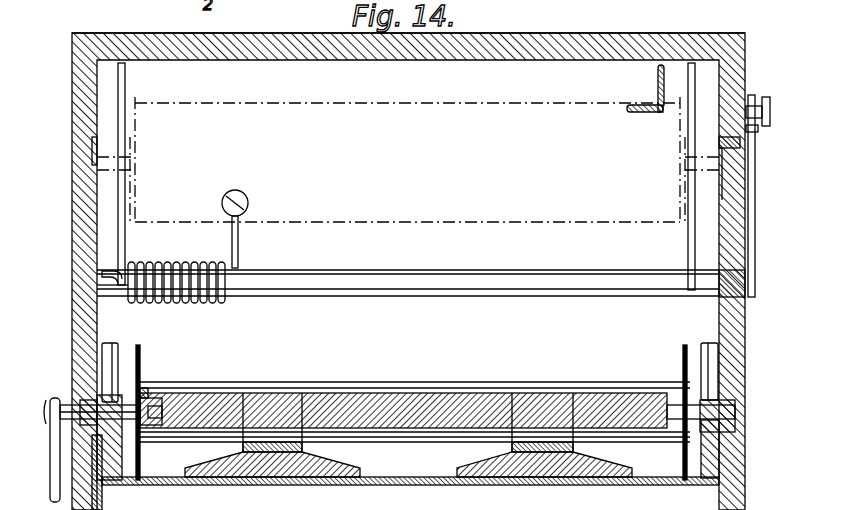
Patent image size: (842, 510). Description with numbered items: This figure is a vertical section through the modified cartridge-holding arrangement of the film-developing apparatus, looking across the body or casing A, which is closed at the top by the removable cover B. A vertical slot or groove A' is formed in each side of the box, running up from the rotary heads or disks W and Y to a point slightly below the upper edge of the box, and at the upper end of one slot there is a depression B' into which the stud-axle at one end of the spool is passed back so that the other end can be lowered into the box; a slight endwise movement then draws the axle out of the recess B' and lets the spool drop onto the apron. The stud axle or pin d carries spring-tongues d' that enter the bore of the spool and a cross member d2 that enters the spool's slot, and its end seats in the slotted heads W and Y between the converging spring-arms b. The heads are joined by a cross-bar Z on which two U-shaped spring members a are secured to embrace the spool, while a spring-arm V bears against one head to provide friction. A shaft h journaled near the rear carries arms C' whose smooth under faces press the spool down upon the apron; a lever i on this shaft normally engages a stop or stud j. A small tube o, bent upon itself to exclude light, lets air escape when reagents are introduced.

The body or casing A is at (390, 271).
The vertical slot or groove A' is at (709, 160).
The removable cover B is at (408, 20).
The depression B' is at (753, 150).
The arms C' is at (410, 176).
The small tube o is at (656, 80).
The set screw l is at (239, 242).
The shaft h is at (421, 272).
The lever i is at (756, 174).
The stop or stud j is at (759, 132).
The U-shaped spring members a is at (304, 446).
The spring-arms b is at (110, 364).
The stud axle or pin d is at (389, 435).
The spring-tongues d' is at (174, 391).
The cross member d2 is at (150, 392).
The head or disk W is at (123, 452).
The head Y is at (700, 452).
The cross-bar Z is at (462, 486).
The spring-arm V is at (103, 502).